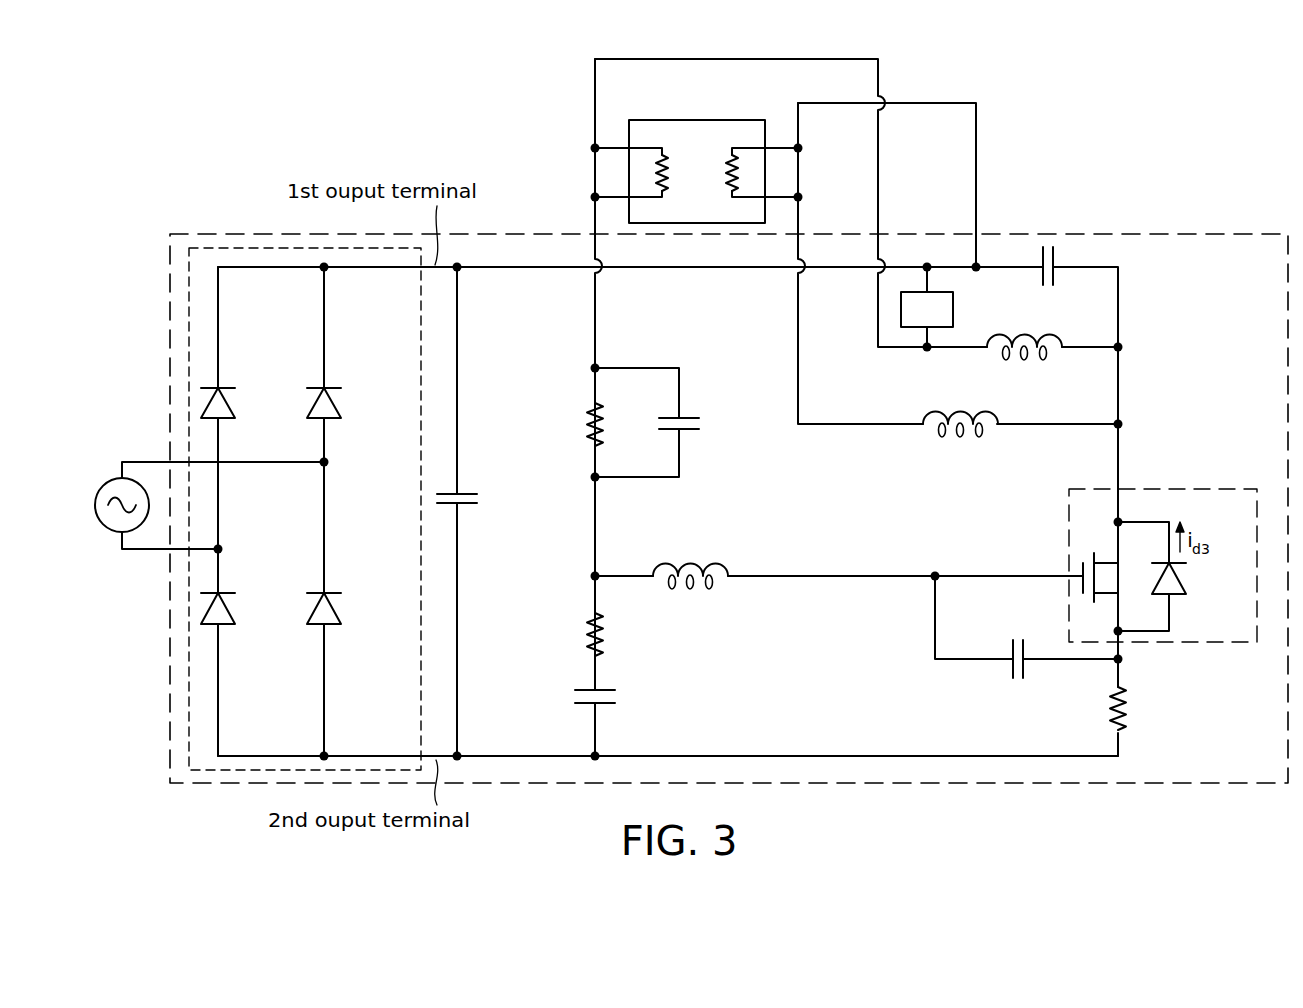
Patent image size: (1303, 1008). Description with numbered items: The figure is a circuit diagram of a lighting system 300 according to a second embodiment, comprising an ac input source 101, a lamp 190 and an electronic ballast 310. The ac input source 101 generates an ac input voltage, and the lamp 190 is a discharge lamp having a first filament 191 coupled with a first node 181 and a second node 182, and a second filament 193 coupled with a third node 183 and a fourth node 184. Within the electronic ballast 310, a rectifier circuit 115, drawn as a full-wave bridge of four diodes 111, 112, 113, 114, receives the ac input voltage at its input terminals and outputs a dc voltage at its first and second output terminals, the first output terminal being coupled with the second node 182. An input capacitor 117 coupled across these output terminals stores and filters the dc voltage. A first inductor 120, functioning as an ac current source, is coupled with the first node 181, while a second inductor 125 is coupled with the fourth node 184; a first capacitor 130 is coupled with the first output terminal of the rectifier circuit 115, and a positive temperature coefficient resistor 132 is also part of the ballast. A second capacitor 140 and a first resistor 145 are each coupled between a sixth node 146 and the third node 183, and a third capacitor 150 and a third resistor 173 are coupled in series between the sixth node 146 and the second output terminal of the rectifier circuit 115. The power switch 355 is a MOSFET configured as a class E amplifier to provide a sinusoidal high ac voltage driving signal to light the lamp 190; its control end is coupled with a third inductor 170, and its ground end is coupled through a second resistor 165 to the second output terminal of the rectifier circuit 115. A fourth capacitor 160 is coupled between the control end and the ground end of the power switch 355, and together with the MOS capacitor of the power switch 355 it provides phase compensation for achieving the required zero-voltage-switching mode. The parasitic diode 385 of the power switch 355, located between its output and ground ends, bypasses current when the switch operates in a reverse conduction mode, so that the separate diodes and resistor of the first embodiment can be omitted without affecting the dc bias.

The lighting system 300 is at (1135, 130).
The electronic ballast 310 is at (236, 234).
The ac input source 101 is at (103, 487).
The diode 111 is at (236, 406).
The diode 112 is at (342, 406).
The diode 113 is at (236, 612).
The diode 114 is at (342, 612).
The rectifier circuit 115 is at (189, 758).
The input capacitor 117 is at (480, 500).
The first inductor 120 is at (962, 415).
The second inductor 125 is at (1026, 338).
The first capacitor 130 is at (1050, 288).
The positive temperature coefficient (PTC) resistor 132 is at (910, 322).
The second capacitor 140 is at (703, 423).
The first resistor 145 is at (584, 426).
The sixth node 146 is at (592, 574).
The third capacitor 150 is at (618, 698).
The fourth capacitor 160 is at (1016, 680).
The second resistor 165 is at (1104, 708).
The third inductor 170 is at (692, 565).
The third resistor 173 is at (580, 636).
The first node 181 is at (803, 197).
The second node 182 is at (803, 148).
The third node 183 is at (591, 197).
The fourth node 184 is at (591, 148).
The lamp 190 is at (718, 120).
The first filament 191 is at (726, 180).
The second filament 193 is at (667, 168).
The power switch 355 is at (1163, 489).
The parasitic diode 385 is at (1188, 582).